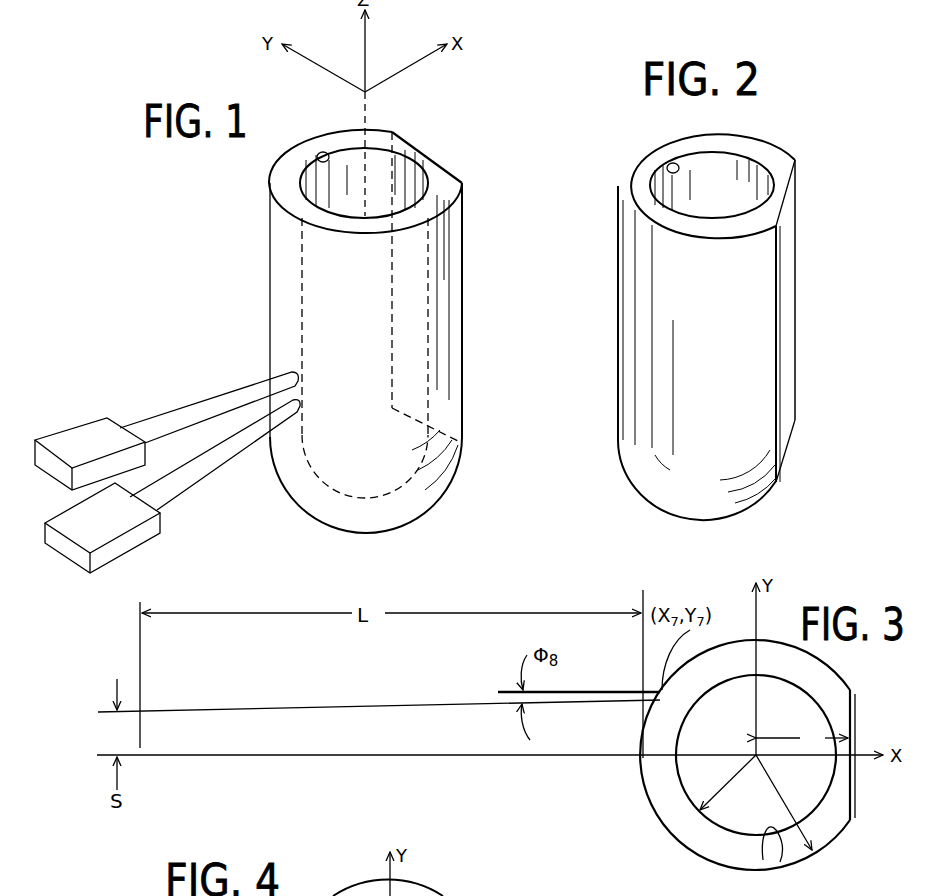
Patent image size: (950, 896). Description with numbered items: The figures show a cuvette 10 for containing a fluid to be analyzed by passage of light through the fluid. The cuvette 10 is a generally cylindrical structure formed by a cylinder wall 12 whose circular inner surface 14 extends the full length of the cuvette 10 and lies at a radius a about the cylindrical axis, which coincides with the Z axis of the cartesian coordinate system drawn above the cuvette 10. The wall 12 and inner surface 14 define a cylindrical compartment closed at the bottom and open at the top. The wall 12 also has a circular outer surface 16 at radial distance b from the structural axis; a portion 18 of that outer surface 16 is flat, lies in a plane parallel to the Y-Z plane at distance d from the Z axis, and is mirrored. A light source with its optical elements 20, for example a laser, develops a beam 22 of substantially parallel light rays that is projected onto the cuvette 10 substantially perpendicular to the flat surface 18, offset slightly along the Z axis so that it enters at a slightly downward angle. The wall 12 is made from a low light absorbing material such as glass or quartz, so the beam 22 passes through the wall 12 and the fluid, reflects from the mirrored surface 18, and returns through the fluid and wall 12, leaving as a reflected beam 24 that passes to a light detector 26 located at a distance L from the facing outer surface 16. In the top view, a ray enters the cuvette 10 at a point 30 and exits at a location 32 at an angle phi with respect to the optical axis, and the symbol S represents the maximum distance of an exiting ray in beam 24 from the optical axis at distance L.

In FIG. 1, the cuvette 10 is at (508, 366).
In FIG. 2, the cuvette 10 is at (841, 316).
In FIG. 3, the cuvette 10 is at (892, 824).
In FIG. 1, the cylinder wall 12 is at (283, 178).
In FIG. 2, the cylinder wall 12 is at (632, 174).
In FIG. 3, the cylinder wall 12 is at (712, 840).
In FIG. 1, the circular inner surface 14 is at (325, 152).
In FIG. 2, the circular inner surface 14 is at (668, 163).
In FIG. 3, the circular inner surface 14 is at (763, 860).
In FIG. 1, the circular outer surface 16 is at (446, 314).
In FIG. 2, the circular outer surface 16 is at (757, 346).
In FIG. 3, the circular outer surface 16 is at (663, 813).
In FIG. 1, the flat portion 18 is at (427, 163).
In FIG. 2, the flat portion 18 is at (786, 260).
In FIG. 3, the flat portion 18 is at (852, 730).
In FIG. 1, the light source and associated optical elements 20 is at (80, 438).
In FIG. 1, the light beam 22 is at (200, 408).
In FIG. 1, the reflected beam 24 is at (218, 458).
In FIG. 1, the light detector 26 is at (135, 536).
In FIG. 3, the entry point 30 is at (660, 690).
In FIG. 3, the exit location 32 is at (658, 700).